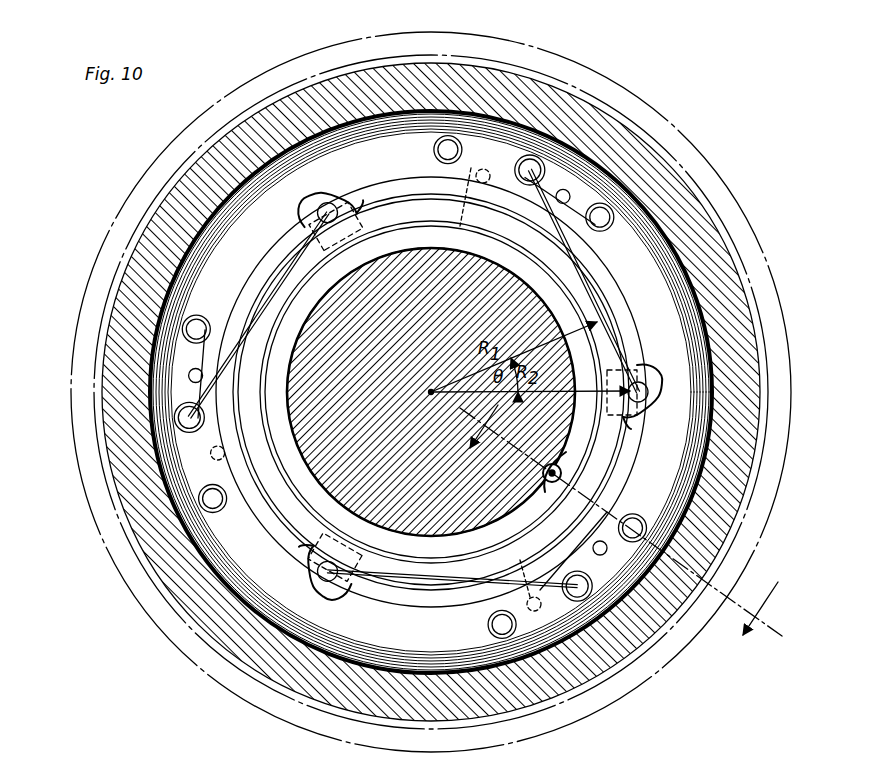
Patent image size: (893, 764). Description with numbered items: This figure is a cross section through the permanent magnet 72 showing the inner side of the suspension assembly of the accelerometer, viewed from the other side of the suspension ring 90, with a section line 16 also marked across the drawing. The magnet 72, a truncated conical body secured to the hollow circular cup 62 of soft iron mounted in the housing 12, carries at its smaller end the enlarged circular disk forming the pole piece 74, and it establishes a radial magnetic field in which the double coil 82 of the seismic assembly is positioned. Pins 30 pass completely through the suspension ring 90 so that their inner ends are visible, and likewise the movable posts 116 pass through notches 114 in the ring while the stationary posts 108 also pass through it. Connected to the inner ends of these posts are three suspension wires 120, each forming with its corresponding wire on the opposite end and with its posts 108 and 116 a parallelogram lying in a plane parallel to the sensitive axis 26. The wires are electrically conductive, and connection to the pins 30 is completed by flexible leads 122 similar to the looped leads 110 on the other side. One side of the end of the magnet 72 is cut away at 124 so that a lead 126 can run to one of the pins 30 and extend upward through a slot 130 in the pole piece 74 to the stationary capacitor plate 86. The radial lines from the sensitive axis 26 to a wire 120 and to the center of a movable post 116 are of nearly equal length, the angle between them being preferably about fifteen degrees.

The housing 12 is at (527, 58).
The hollow circular cup 62 is at (640, 152).
The suspension ring 90 is at (242, 232).
The double coil 82 is at (393, 212).
The lead 126 is at (641, 492).
The permanent magnet 72 is at (410, 360).
The cut-away portion 124 is at (478, 535).
The slot 130 is at (556, 465).
The stationary capacitor plate 86 is at (553, 490).
The sensitive axis 26 is at (428, 394).
The section line 16- 16 is at (612, 525).
The pins 30 is at (436, 153).
The stationary posts 108 is at (541, 161).
The flexible leads 122 is at (582, 205).
The looped leads 110 is at (62, 456).
The suspension wires 120 is at (273, 290).
The pole piece 74 is at (305, 562).
The notches 114 is at (334, 200).
The movable posts 116 is at (314, 208).